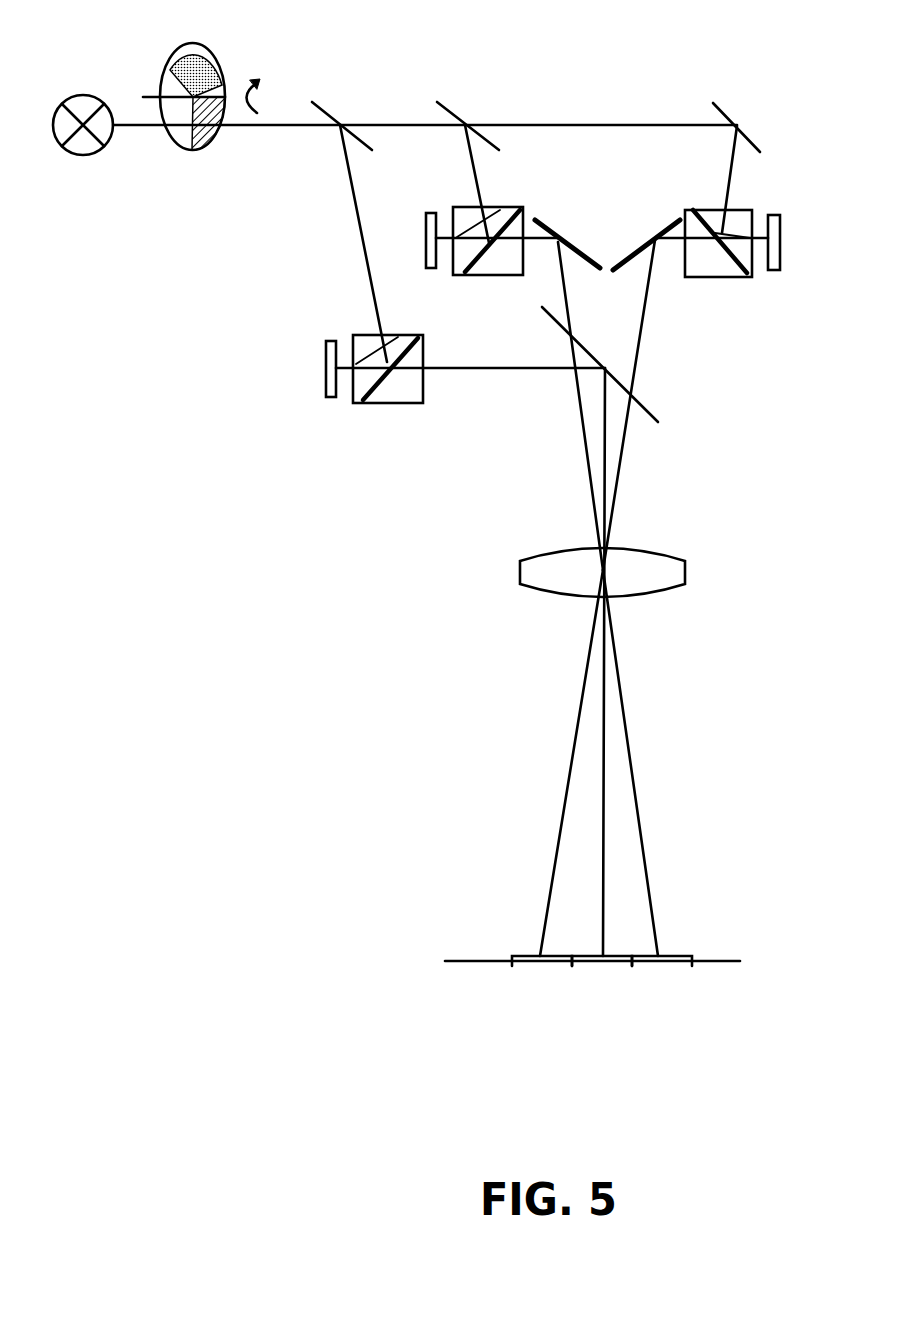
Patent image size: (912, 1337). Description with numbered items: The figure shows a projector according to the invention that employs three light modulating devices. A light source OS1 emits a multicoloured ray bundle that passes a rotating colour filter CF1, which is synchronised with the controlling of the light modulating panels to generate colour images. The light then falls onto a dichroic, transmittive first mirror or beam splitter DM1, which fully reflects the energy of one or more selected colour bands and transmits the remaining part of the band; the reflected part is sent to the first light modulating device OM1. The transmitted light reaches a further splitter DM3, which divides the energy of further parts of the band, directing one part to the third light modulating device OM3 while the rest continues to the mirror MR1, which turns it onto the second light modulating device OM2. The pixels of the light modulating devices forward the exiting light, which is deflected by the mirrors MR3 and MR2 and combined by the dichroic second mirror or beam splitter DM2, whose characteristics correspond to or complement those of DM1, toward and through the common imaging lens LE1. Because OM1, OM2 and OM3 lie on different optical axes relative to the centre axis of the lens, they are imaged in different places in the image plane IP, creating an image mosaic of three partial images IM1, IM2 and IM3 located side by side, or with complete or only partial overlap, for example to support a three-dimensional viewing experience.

The light source OS1 is at (83, 96).
The rotating colour filter CF1 is at (203, 82).
The dichroic first mirror or beam splitter DM1 is at (348, 110).
The dichroic second mirror or beam splitter DM2 is at (633, 364).
The further splitter DM3 is at (482, 110).
The mirror MR1 is at (757, 112).
The mirror MR2 is at (647, 227).
The mirror MR3 is at (567, 226).
The first light modulating device OM1 is at (353, 349).
The second light modulating device OM2 is at (760, 227).
The third light modulating device OM3 is at (460, 223).
The imaging lens LE1 is at (634, 557).
The image plane IP is at (602, 941).
The first partial image IM1 is at (602, 979).
The second partial image IM2 is at (662, 979).
The third partial image IM3 is at (542, 979).